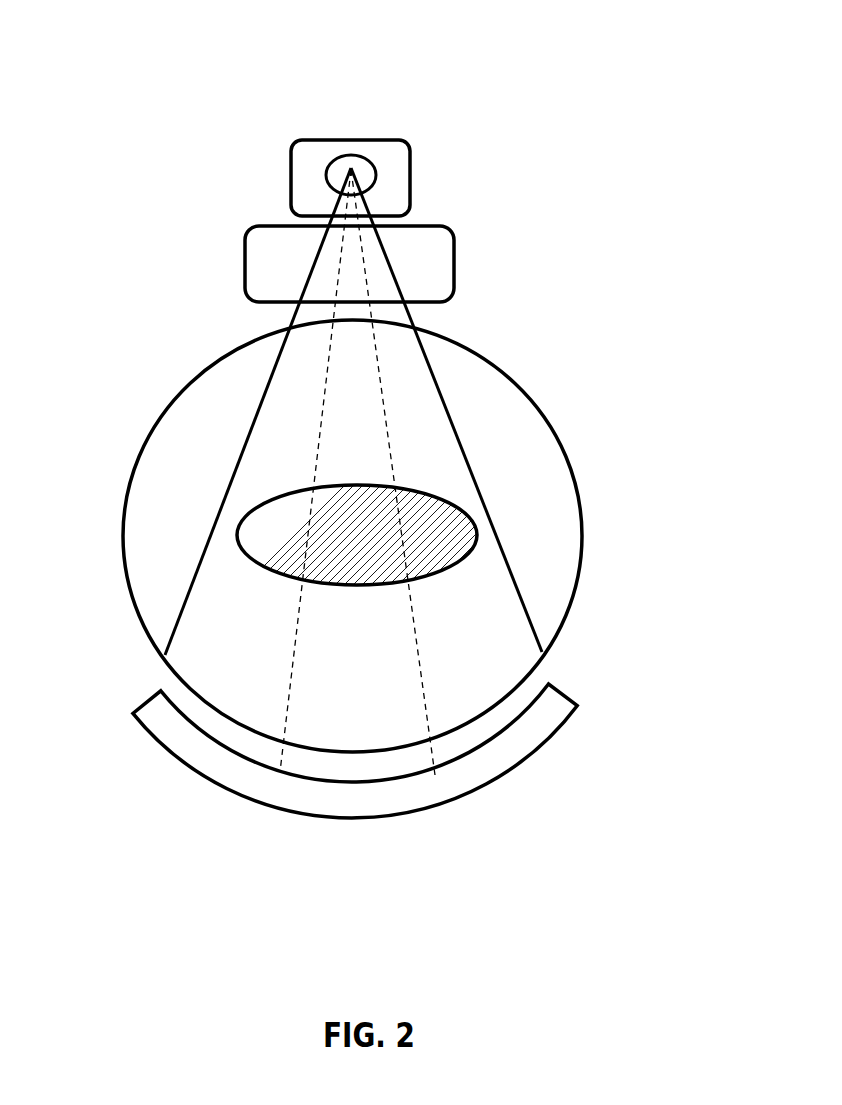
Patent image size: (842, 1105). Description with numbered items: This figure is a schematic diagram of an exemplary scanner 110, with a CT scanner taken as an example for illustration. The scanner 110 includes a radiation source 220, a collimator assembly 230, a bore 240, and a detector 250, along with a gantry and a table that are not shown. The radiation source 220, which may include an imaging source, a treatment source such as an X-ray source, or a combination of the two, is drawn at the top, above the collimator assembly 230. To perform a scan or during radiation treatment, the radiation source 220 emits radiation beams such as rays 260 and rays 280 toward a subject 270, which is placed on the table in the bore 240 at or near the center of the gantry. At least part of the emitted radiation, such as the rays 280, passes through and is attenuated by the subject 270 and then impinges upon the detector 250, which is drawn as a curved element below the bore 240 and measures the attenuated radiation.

The scanner 110 is at (72, 30).
The radiation source 220 is at (410, 177).
The collimator assembly 230 is at (454, 265).
The bore 240 is at (577, 492).
The detector 250 is at (570, 697).
The rays 260 is at (445, 400).
The subject 270 is at (330, 583).
The rays 280 is at (412, 613).